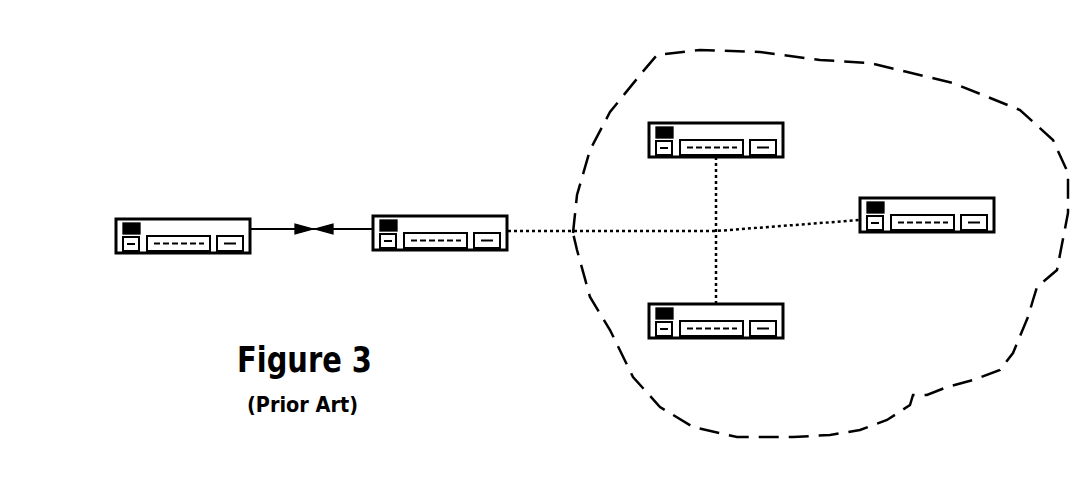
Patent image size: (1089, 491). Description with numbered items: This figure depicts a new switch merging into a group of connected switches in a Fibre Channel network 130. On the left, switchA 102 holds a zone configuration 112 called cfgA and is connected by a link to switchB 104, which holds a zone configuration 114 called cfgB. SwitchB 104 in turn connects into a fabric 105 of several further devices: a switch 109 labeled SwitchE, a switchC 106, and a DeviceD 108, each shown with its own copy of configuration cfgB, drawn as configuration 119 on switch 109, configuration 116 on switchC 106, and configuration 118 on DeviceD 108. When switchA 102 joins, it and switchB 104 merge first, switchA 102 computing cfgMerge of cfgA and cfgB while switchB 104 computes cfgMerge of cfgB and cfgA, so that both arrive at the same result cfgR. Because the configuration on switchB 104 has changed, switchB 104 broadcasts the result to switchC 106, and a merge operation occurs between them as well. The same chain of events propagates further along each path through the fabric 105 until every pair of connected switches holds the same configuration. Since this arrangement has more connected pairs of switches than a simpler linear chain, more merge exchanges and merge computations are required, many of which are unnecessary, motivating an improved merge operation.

The network system 130 is at (336, 84).
The switchA 102 is at (182, 255).
The zone configuration cfgA 112 is at (247, 203).
The switchB 104 is at (404, 252).
The zone configuration cfgB 114 is at (453, 203).
The network domain 105 is at (630, 377).
The switch 109 is at (680, 158).
The configuration B of switch E 119 is at (735, 98).
The switchC 106 is at (773, 358).
The configuration B of switch C 116 is at (752, 293).
The DeviceD 108 is at (957, 252).
The configuration B of device D 118 is at (905, 178).